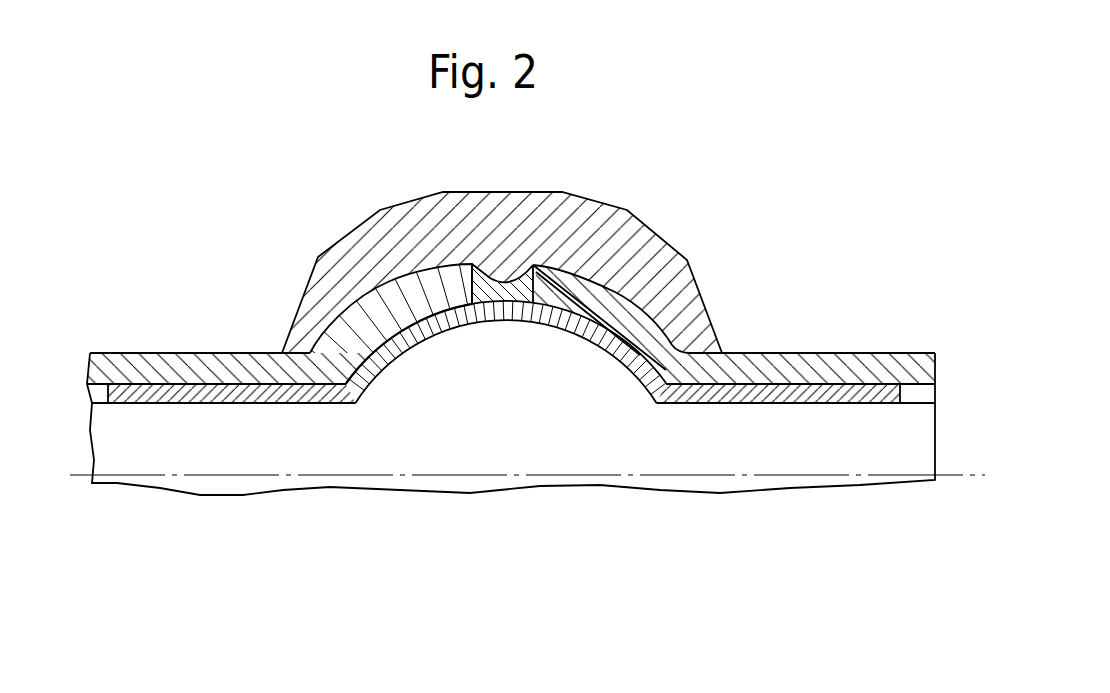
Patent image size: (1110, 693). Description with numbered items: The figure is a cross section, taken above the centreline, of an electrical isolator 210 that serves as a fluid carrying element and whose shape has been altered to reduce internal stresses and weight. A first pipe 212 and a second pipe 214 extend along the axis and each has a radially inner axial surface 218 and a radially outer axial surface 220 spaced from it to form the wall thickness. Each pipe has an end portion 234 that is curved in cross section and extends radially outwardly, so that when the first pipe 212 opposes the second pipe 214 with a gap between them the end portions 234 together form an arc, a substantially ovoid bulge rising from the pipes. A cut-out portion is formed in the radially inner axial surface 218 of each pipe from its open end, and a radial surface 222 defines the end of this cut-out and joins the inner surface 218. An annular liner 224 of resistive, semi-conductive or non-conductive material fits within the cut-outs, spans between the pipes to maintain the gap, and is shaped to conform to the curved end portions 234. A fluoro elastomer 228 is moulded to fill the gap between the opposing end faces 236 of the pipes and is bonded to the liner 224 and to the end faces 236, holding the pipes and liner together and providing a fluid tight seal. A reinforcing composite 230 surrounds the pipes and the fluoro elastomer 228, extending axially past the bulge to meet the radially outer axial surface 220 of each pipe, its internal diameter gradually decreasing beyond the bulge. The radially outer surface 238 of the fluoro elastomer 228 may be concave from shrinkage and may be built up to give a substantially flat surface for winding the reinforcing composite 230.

The electrical isolator 210 is at (603, 177).
The first pipe 212 is at (138, 352).
The second pipe 214 is at (795, 352).
The radially inner axial surface 218 is at (96, 404).
The radially outer axial surface 220 is at (211, 352).
The radial surface 222 is at (120, 402).
The annular liner 224 is at (779, 392).
The fluoro elastomer 228 is at (488, 282).
The reinforcing composite 230 is at (610, 250).
The end portion 234 is at (395, 303).
The end face 236 is at (521, 300).
The radially outer surface 238 is at (491, 273).